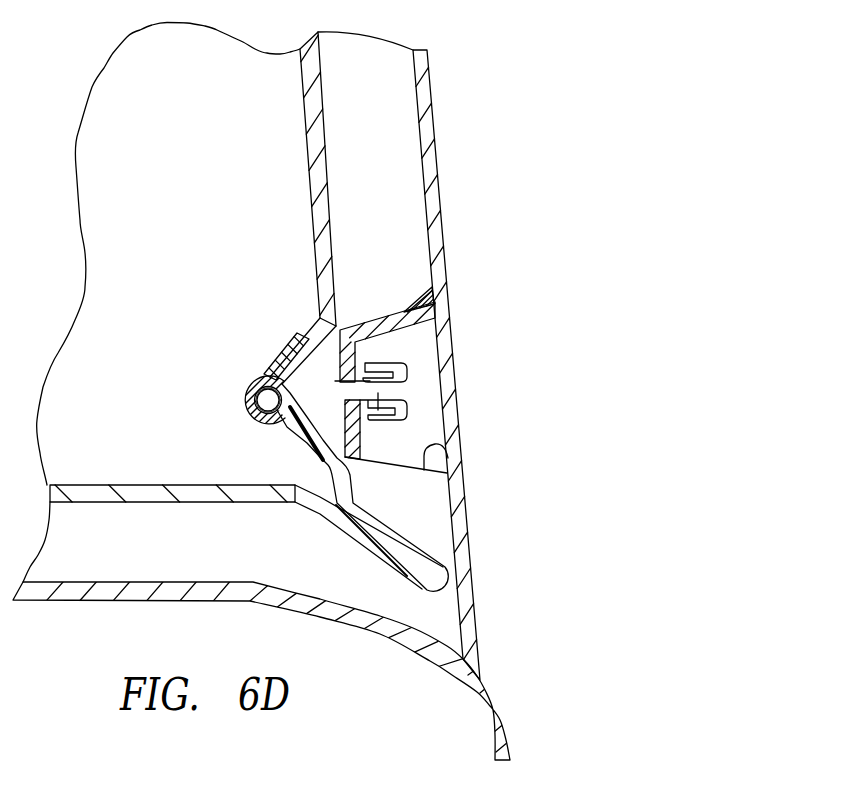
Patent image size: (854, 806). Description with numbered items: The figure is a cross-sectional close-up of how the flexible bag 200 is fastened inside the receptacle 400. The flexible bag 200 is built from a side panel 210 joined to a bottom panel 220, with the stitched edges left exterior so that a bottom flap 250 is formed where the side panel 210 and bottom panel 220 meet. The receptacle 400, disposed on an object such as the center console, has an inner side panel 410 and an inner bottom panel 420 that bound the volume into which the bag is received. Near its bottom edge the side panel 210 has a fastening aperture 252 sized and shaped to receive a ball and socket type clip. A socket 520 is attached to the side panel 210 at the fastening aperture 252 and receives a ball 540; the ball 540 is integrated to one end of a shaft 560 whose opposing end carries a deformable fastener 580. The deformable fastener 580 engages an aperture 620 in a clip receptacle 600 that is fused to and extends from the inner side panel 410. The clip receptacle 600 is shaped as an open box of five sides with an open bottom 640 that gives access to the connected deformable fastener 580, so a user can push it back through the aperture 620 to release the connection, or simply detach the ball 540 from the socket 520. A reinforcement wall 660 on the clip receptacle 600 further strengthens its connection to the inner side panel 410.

The flexible bag 200 is at (193, 207).
The side panel 210 is at (315, 163).
The bottom panel 220 is at (183, 484).
The bottom flap 250 is at (431, 565).
The fastening aperture 252 is at (296, 441).
The receptacle 400 is at (283, 396).
The inner side panel 410 is at (428, 97).
The inner bottom panel 420 is at (490, 694).
The socket 520 is at (269, 377).
The ball 540 is at (272, 402).
The shaft 560 is at (386, 423).
The deformable fastener 580 is at (402, 385).
The clip receptacle 600 is at (444, 358).
The aperture 620 is at (310, 333).
The open bottom 640 is at (446, 455).
The reinforcement wall 660 is at (449, 293).